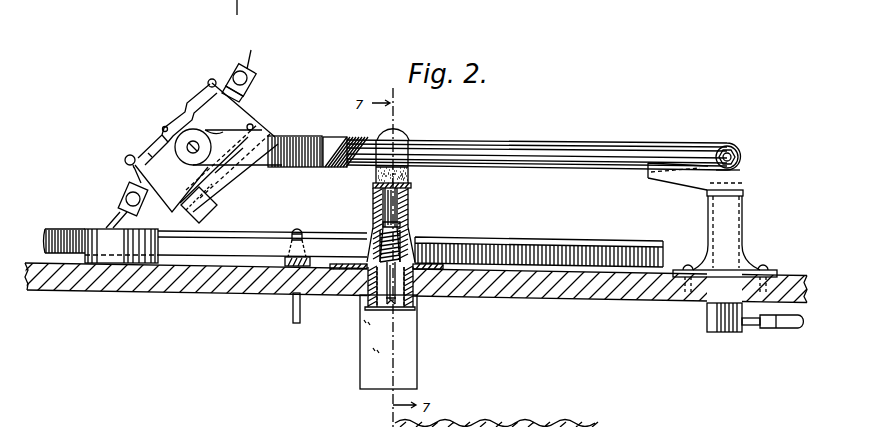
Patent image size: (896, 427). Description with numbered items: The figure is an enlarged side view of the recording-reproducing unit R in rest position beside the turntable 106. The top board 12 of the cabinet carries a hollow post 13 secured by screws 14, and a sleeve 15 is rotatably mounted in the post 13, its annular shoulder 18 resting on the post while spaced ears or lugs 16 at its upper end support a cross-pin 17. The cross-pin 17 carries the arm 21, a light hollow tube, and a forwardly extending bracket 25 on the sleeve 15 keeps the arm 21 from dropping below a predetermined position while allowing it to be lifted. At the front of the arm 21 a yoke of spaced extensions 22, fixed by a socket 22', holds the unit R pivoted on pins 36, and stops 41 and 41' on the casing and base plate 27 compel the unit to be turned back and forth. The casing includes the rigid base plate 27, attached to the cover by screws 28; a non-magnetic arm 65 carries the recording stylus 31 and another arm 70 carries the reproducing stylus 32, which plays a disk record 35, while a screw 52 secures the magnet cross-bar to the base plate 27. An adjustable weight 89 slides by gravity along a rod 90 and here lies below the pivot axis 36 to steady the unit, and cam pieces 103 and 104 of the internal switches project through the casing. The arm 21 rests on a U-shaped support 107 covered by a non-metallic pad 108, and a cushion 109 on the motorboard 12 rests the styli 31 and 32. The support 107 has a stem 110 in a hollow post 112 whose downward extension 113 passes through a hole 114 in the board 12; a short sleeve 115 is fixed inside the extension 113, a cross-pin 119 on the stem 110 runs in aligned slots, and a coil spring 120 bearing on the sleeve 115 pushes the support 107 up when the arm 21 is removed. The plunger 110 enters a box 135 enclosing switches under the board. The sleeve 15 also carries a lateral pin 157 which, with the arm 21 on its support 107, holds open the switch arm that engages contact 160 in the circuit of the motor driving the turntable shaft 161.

The top board 12 is at (113, 272).
The hollow post 13 is at (737, 212).
The screws 14 is at (689, 265).
The sleeve 15 is at (735, 183).
The ears or lugs 16 is at (738, 171).
The bolt or cross-pin 17 is at (740, 158).
The annular shoulder 18 is at (737, 194).
The arm 21 is at (447, 146).
The yoke extensions 22 is at (244, 118).
The socket 22' is at (345, 139).
The bracket 25 is at (668, 180).
The base plate 27 is at (200, 100).
The screws 28 is at (213, 79).
The recording stylus 31 is at (245, 62).
The reproducing stylus 32 is at (113, 226).
The disk record 35 is at (507, 244).
The pins 36 is at (200, 135).
The stop 41 is at (276, 114).
The stop 41' is at (140, 119).
The screw or bolt 52 is at (164, 128).
The non-magnetic arm 65 is at (252, 92).
The arm 70 is at (125, 193).
The adjustable weight 89 is at (218, 221).
The rod 90 is at (233, 186).
The cam pieces 103 is at (287, 140).
The cam pieces 104 is at (178, 193).
The turntable 106 is at (471, 244).
The support 107 is at (396, 131).
The non-metallic pad 108 is at (374, 177).
The cushion 109 is at (98, 231).
The stem 110 is at (398, 207).
The hollow post 112 is at (374, 200).
The downward extension 113 is at (402, 306).
The hole 114 is at (413, 287).
The short sleeve 115 is at (370, 292).
The cross-pin 119 is at (383, 306).
The expanding coil spring 120 is at (378, 249).
The box 135 is at (408, 355).
The lateral pin 157 is at (753, 327).
The contact 160 is at (790, 330).
The turntable shaft 161 is at (293, 306).
The recording and reproducing unit R is at (150, 155).